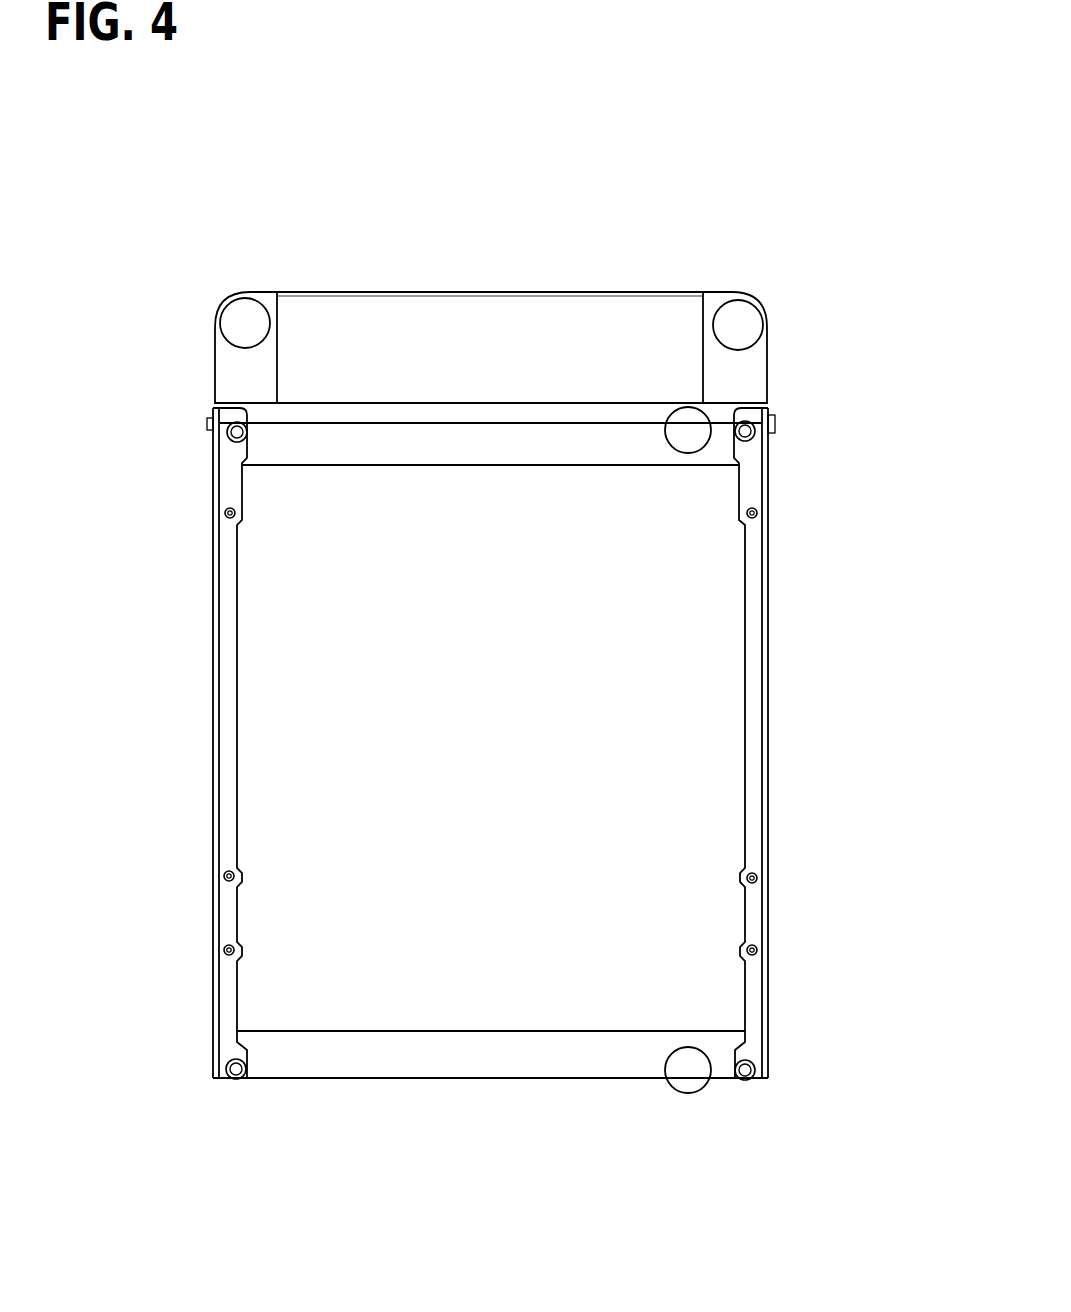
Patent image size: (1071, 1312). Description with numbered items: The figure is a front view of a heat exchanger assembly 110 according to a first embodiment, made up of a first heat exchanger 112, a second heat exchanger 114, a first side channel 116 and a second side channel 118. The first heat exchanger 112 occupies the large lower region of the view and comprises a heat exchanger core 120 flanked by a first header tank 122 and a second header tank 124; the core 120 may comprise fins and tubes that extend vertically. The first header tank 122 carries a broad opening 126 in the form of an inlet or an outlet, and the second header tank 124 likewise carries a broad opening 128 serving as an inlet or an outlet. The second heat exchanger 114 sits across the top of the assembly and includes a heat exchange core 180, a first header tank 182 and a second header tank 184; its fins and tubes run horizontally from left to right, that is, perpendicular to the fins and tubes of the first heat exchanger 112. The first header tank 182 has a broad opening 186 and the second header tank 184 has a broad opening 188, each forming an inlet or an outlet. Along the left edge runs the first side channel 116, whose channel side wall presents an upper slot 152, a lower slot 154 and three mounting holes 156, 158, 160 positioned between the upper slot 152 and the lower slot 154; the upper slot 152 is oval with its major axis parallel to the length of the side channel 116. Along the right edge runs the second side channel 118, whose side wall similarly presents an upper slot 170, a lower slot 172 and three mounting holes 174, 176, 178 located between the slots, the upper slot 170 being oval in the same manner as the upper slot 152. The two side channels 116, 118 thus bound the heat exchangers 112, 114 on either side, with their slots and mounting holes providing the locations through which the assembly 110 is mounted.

The heat exchanger assembly 110 is at (760, 217).
The first heat exchanger 112 is at (625, 767).
The second heat exchanger 114 is at (415, 330).
The first side channel 116 is at (210, 680).
The second side channel 118 is at (765, 652).
The heat exchanger core 120 is at (660, 857).
The first header tank 122 is at (708, 452).
The second header tank 124 is at (367, 1050).
The broad opening 126 is at (690, 430).
The broad opening 128 is at (688, 1075).
The upper slot 152 is at (234, 428).
The lower slot 154 is at (228, 1072).
The mounting hole 156 is at (226, 513).
The mounting hole 158 is at (226, 877).
The mounting hole 160 is at (228, 952).
The upper slot 170 is at (750, 438).
The lower slot 172 is at (750, 1072).
The mounting hole 174 is at (754, 516).
The mounting hole 176 is at (755, 881).
The mounting hole 178 is at (755, 953).
The heat exchange core 180 is at (478, 328).
The first header tank 182 is at (238, 372).
The second header tank 184 is at (737, 372).
The broad opening 186 is at (238, 317).
The broad opening 188 is at (742, 321).